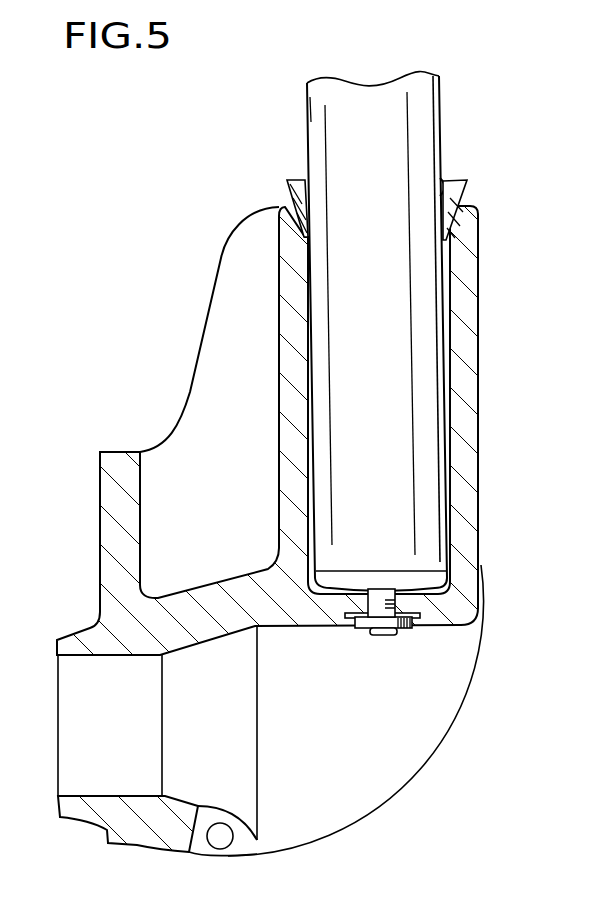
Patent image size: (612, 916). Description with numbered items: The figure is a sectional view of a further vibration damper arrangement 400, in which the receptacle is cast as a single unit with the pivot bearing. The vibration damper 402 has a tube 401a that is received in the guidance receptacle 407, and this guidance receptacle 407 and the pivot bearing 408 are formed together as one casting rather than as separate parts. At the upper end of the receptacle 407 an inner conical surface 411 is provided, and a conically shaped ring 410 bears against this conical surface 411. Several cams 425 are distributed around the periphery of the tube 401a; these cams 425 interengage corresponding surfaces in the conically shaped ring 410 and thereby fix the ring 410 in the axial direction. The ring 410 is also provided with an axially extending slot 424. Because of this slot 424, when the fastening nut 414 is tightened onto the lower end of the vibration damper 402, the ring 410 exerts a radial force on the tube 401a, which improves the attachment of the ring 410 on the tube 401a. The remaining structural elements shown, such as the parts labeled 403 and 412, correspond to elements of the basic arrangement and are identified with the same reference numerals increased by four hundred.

The vibration damper arrangement 400 is at (168, 274).
The tube 401a is at (420, 102).
The vibration damper 402 is at (301, 108).
The housing sloped wall 403 is at (188, 397).
The guidance receptacle 407 is at (463, 378).
The pivot bearing 408 is at (247, 617).
The conically shaped ring 410 is at (288, 194).
The inner conical surface 411 is at (456, 222).
The knurled nut 412 is at (408, 640).
The fastening nut 414 is at (382, 630).
The axially extending slot 424 is at (451, 207).
The cams 425 is at (443, 181).